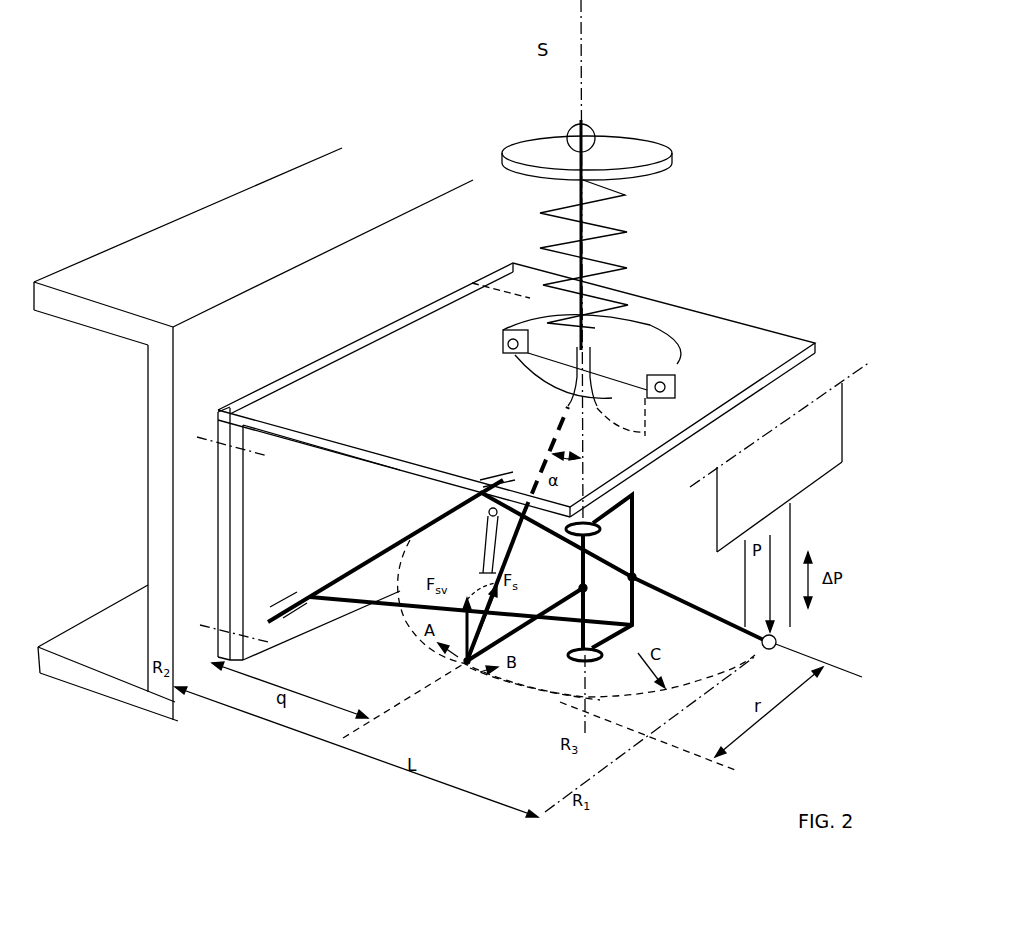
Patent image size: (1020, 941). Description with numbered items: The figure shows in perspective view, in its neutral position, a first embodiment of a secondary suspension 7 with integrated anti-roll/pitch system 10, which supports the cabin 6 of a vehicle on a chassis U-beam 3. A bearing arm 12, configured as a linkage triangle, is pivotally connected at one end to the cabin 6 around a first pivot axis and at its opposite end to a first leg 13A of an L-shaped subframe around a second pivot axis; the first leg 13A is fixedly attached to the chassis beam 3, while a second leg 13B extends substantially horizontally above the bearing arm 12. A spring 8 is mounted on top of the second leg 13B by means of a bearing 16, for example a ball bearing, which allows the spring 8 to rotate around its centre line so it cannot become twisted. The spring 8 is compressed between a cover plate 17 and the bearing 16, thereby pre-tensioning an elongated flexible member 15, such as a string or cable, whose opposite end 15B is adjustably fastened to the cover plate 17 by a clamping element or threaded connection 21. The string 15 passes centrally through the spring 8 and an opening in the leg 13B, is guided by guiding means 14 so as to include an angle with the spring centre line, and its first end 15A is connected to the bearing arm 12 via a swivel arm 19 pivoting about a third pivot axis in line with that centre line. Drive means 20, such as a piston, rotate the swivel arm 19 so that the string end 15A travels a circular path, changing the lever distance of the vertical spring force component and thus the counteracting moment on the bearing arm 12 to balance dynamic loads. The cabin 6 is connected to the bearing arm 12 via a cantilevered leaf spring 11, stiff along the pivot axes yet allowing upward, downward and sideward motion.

The U-beam 3 is at (246, 236).
The cabin 6 is at (764, 476).
The secondary suspension 7 is at (253, 390).
The anti-roll/pitch system 10 is at (245, 129).
The spring 8 is at (593, 215).
The leaf spring 11 is at (782, 521).
The bearing arm 12 is at (376, 618).
The first leg of subframe 13A is at (765, 641).
The second leg of subframe 13B is at (393, 402).
The guiding means 14 is at (557, 407).
The elongated flexible member 15 is at (566, 225).
The first end of string 15A is at (468, 665).
The opposite end of string 15B is at (563, 110).
The bearing 16 is at (633, 338).
The cover plate 17 is at (633, 148).
The swivel arm 19 is at (508, 646).
The drive means 20 is at (474, 526).
The threaded connection 21 is at (595, 132).